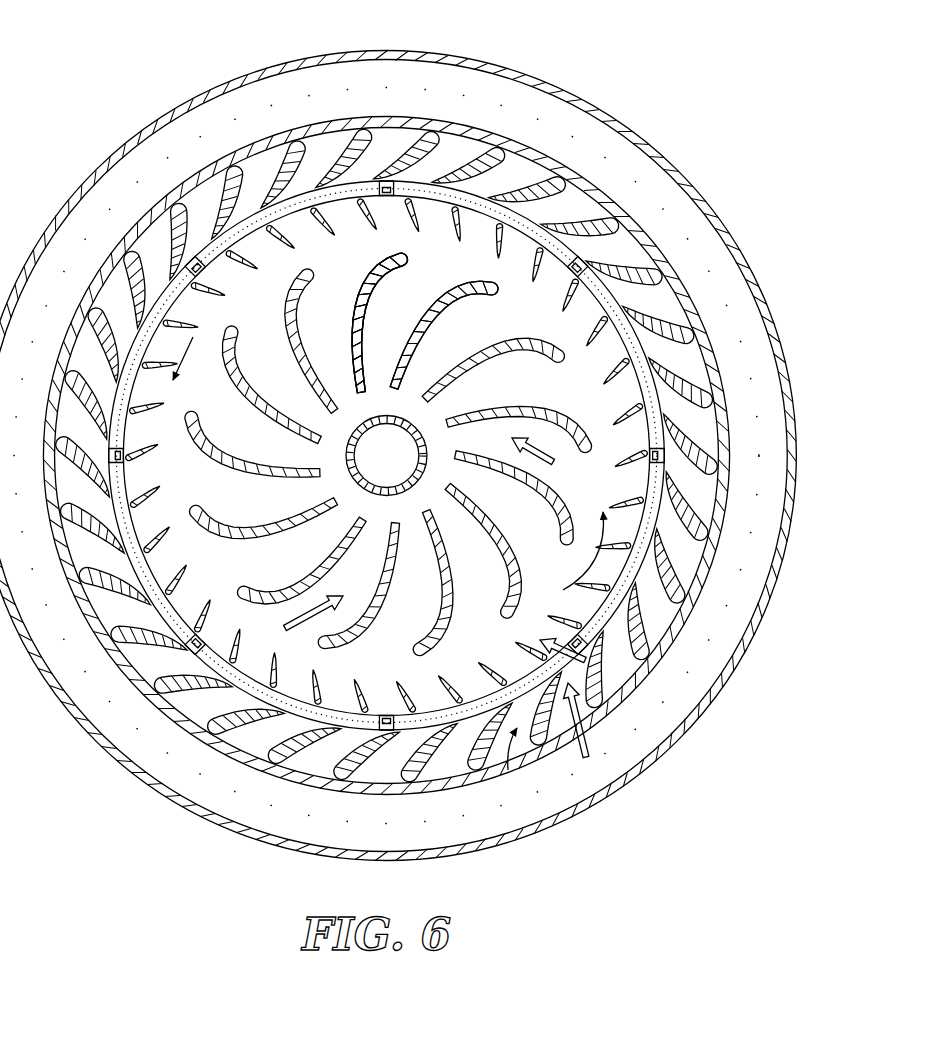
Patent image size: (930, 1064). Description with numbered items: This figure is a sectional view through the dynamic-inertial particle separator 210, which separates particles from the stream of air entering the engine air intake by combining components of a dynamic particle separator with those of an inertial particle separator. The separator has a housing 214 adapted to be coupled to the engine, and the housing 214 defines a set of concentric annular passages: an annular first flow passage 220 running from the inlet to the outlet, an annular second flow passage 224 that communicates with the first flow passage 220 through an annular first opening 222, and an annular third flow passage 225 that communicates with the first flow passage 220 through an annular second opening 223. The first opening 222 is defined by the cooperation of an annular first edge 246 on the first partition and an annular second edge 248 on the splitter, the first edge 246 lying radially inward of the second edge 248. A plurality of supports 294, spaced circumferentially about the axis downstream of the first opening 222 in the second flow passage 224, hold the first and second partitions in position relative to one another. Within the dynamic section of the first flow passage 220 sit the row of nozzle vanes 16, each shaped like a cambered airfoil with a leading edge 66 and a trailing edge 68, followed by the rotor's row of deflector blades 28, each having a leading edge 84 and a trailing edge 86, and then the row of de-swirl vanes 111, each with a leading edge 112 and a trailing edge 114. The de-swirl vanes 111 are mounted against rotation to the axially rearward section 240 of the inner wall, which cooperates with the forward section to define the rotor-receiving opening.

The dynamic-inertial particle separator 210 is at (108, 92).
The housing 214 is at (567, 83).
The annular second opening 223 is at (598, 130).
The annular third flow passage 225 is at (648, 187).
The leading edge 66 is at (640, 220).
The trailing edge 68 is at (530, 232).
The nozzle vane 16 is at (302, 174).
The supports 294 is at (384, 200).
The annular second edge 248 is at (214, 255).
The annular first edge 246 is at (212, 258).
The deflector blade 28 is at (190, 292).
The de-swirl vane 111 is at (378, 316).
The leading edge 112 is at (411, 259).
The trailing edge 114 is at (390, 388).
The annular first opening 222 is at (386, 456).
The annular second flow passage 224 is at (510, 255).
The annular first flow passage 220 is at (473, 318).
The leading edge 84 is at (603, 330).
The trailing edge 86 is at (585, 335).
The axially rearward section 240 is at (355, 478).